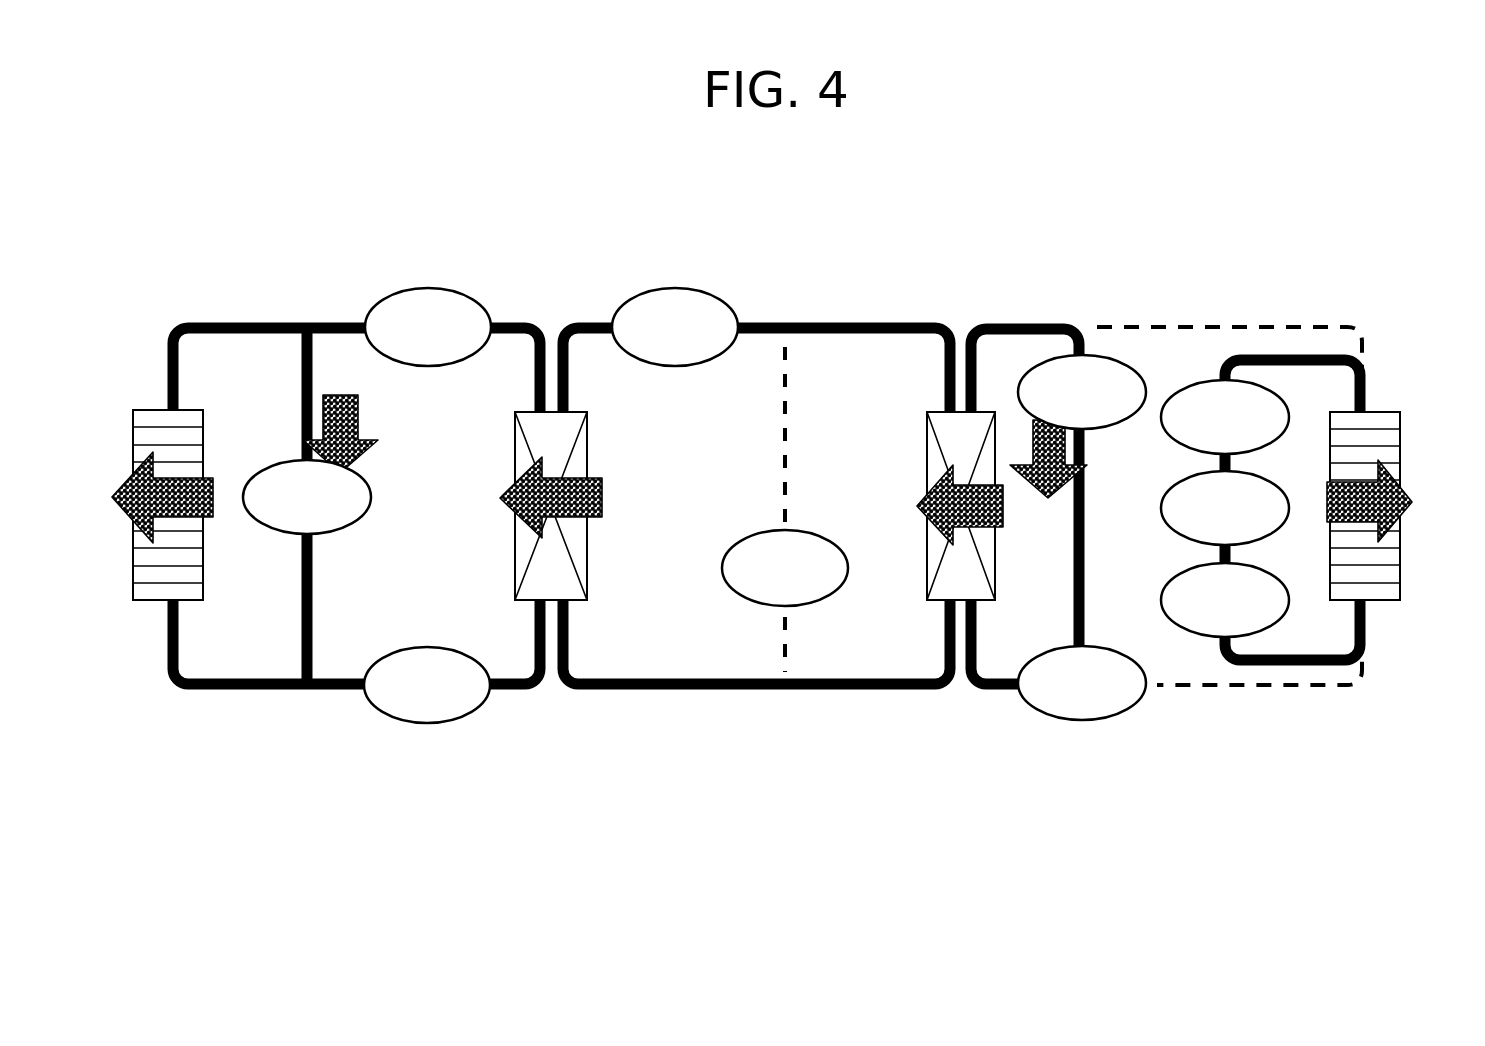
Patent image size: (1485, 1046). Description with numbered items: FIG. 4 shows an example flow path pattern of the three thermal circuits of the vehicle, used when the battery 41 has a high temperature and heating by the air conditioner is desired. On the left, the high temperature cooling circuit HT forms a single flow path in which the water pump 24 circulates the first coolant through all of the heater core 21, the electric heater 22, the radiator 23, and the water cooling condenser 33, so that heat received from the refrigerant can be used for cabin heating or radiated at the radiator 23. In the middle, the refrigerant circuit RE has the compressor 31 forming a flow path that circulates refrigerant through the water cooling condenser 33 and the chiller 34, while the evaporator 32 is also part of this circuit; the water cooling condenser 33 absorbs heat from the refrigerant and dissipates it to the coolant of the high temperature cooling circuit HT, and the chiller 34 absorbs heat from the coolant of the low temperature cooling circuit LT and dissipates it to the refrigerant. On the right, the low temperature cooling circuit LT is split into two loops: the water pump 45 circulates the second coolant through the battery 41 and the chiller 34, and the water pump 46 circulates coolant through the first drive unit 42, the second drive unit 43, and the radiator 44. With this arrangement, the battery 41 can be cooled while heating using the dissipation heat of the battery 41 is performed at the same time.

The heater core 21 is at (370, 490).
The electric heater 22 is at (477, 300).
The radiator 23 is at (203, 443).
The water pump 24 is at (428, 647).
The compressor 31 is at (723, 292).
The evaporator 32 is at (823, 540).
The water cooling condenser 33 is at (587, 570).
The chiller 34 is at (995, 582).
The battery 41 is at (1117, 358).
The first drive unit 42 is at (1161, 508).
The second drive unit 43 is at (1161, 417).
The radiator 44 is at (1400, 440).
The water pump 45 is at (1113, 648).
The water pump 46 is at (1287, 587).
The high temperature cooling circuit HT is at (233, 323).
The refrigerant circuit RE is at (853, 323).
The low temperature cooling circuit LT is at (1280, 322).